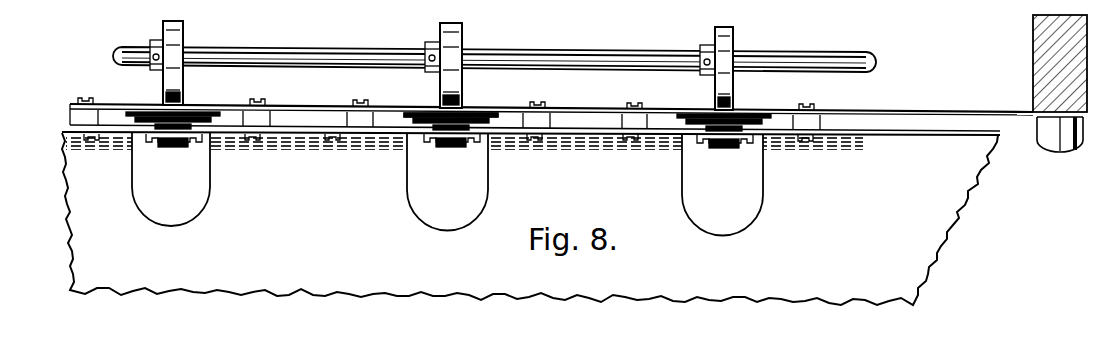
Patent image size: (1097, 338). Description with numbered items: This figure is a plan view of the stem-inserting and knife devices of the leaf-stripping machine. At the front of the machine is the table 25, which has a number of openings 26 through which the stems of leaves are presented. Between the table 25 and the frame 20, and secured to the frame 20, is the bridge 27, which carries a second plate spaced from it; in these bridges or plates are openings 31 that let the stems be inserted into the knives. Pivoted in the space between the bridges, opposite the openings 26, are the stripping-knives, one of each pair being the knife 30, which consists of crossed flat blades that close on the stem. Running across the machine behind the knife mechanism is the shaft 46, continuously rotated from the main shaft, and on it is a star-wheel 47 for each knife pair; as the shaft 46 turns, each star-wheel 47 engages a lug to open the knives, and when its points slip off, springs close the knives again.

The frame 20 is at (1033, 59).
The table 25 is at (531, 218).
The openings 26 is at (447, 184).
The bridge 27 is at (317, 109).
The stripping-knife 30 is at (415, 111).
The openings 31 is at (183, 105).
The shaft 46 is at (385, 50).
The star-wheel 47 is at (183, 30).